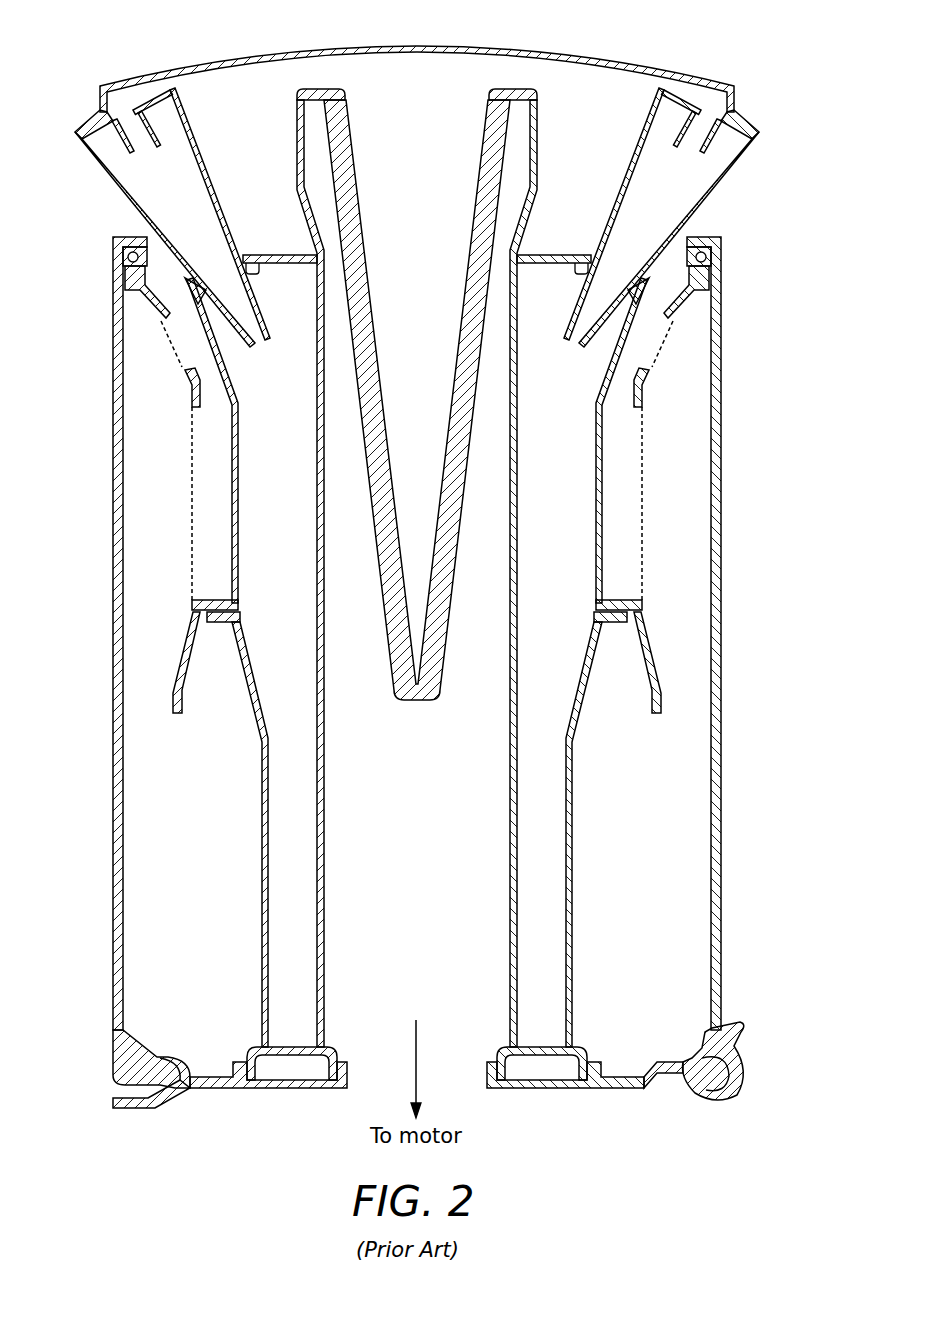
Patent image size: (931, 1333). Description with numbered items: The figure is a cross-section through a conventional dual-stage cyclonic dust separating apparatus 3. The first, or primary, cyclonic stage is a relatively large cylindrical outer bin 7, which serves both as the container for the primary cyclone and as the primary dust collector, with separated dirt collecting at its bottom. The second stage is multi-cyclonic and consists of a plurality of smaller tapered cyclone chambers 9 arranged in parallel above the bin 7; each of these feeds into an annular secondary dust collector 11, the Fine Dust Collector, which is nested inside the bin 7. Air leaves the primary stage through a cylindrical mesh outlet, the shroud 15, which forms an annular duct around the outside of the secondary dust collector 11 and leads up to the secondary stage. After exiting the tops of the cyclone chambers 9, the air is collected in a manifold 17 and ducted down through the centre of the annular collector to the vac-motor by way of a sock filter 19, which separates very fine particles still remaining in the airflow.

The cyclonic dust separating apparatus 3 is at (728, 772).
The outer bin 7 is at (718, 445).
The cyclone chambers 9 is at (128, 170).
The secondary dust collector 11 is at (306, 794).
The shroud 15 is at (643, 512).
The manifold 17 is at (447, 63).
The sock filter 19 is at (346, 122).